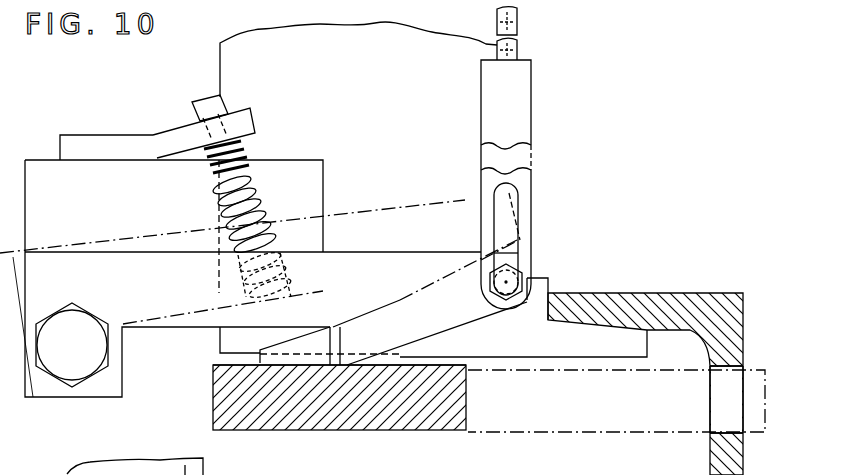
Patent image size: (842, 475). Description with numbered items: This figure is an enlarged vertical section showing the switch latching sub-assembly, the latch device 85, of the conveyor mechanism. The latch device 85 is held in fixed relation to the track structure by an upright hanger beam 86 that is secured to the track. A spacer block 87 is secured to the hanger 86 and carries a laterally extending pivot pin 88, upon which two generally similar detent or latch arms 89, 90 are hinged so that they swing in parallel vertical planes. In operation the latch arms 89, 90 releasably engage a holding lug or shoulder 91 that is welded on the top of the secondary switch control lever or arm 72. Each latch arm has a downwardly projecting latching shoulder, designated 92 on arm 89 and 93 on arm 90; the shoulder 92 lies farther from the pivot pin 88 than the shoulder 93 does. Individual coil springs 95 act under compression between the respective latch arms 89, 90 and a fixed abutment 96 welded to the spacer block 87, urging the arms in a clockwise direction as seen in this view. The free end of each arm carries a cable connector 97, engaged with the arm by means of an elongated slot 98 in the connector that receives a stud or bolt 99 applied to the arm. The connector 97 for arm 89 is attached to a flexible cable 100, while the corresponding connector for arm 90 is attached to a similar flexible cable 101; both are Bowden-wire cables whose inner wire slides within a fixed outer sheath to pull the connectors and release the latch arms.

The secondary switch control lever 72 is at (440, 415).
The latch device 85 is at (545, 190).
The upright hanger beam 86 is at (441, 79).
The spacer block 87 is at (302, 187).
The pivot pin 88 is at (68, 353).
The latch arm 89 is at (447, 333).
The latch arm 90 is at (393, 207).
The holding lug 91 is at (273, 363).
The latching shoulder 92 is at (360, 344).
The latching shoulder 93 is at (335, 325).
The coil spring 95 is at (257, 190).
The fixed abutment 96 is at (245, 125).
The cable connector 97 is at (518, 122).
The elongated slot 98 is at (485, 258).
The stud 99 is at (527, 282).
The flexible cable 100 is at (515, 18).
The flexible cable 101 is at (515, 44).